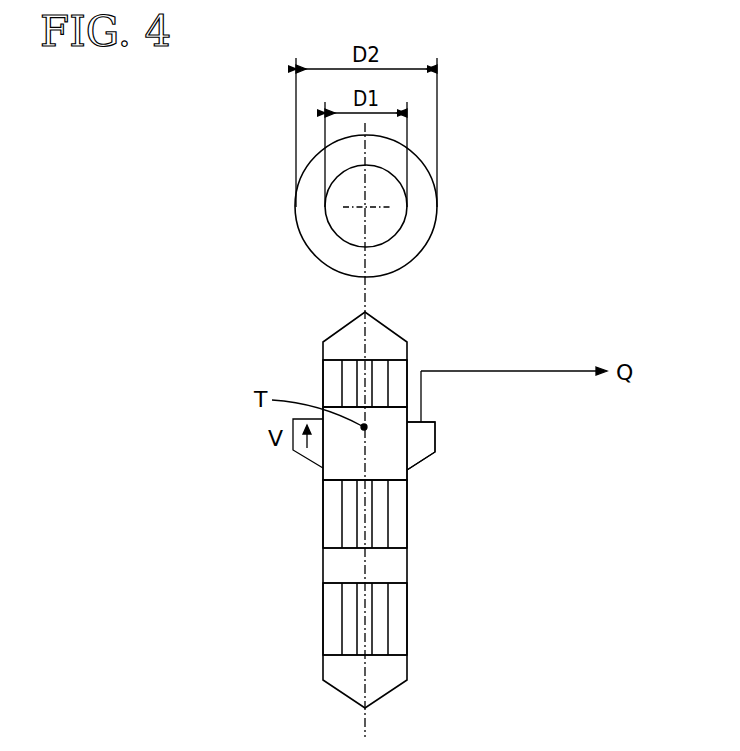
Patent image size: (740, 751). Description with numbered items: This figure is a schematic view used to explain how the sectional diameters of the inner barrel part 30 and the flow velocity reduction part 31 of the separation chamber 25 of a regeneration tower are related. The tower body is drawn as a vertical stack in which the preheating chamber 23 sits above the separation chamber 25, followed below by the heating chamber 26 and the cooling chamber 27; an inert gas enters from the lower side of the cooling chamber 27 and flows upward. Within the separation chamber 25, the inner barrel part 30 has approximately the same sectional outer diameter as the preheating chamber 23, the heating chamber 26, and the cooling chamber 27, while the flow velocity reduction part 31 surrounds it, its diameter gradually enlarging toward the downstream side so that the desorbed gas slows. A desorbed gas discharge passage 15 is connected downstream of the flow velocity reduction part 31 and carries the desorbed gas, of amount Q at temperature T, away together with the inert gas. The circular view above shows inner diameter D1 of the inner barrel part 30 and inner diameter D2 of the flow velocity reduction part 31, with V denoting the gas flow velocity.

The desorbed gas discharge passage 15 is at (421, 398).
The preheating chamber 23 is at (397, 371).
The separation chamber 25 is at (507, 425).
The heating chamber 26 is at (330, 517).
The cooling chamber 27 is at (330, 623).
The inner barrel part 30 is at (402, 472).
The flow velocity reduction part 31 is at (427, 437).